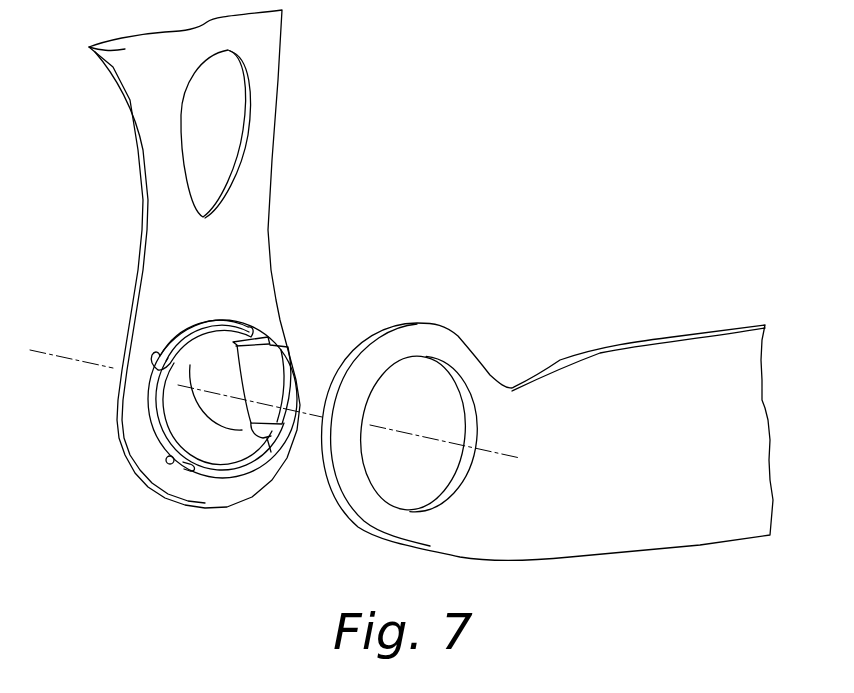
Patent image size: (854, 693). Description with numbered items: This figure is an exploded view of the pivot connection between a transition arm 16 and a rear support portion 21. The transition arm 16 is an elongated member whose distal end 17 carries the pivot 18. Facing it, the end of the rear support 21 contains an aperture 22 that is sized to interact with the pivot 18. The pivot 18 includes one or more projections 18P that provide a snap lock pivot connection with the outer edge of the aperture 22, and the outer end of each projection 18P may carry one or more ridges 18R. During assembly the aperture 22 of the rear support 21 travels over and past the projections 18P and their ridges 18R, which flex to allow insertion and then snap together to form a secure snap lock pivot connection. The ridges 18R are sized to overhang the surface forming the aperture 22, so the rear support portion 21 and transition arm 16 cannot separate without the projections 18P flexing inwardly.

The transition arm 16 is at (260, 245).
The distal end 17 is at (547, 434).
The pivot 18 is at (179, 420).
The projection 18P is at (177, 347).
The ridge 18R is at (198, 480).
The rear support portion 21 is at (545, 543).
The aperture 22 is at (467, 408).